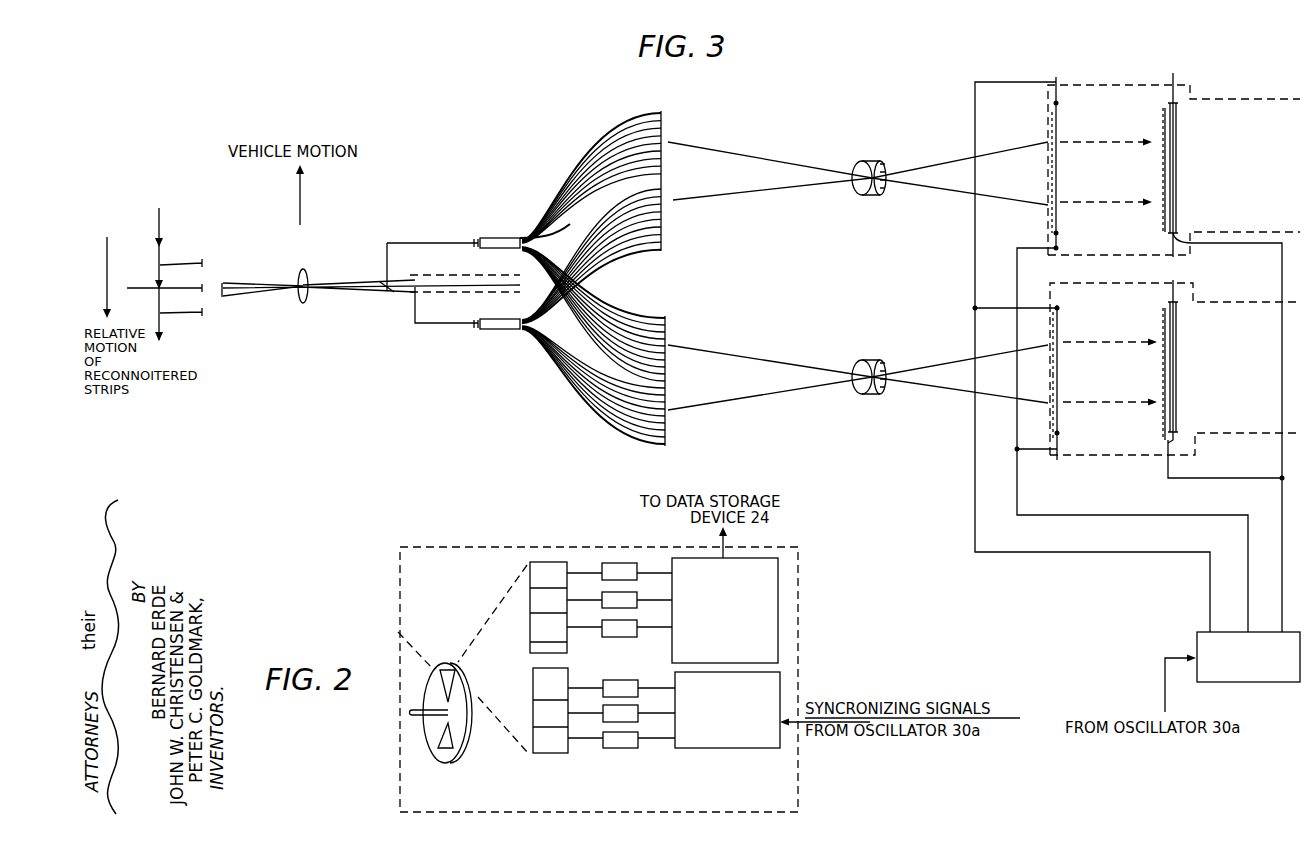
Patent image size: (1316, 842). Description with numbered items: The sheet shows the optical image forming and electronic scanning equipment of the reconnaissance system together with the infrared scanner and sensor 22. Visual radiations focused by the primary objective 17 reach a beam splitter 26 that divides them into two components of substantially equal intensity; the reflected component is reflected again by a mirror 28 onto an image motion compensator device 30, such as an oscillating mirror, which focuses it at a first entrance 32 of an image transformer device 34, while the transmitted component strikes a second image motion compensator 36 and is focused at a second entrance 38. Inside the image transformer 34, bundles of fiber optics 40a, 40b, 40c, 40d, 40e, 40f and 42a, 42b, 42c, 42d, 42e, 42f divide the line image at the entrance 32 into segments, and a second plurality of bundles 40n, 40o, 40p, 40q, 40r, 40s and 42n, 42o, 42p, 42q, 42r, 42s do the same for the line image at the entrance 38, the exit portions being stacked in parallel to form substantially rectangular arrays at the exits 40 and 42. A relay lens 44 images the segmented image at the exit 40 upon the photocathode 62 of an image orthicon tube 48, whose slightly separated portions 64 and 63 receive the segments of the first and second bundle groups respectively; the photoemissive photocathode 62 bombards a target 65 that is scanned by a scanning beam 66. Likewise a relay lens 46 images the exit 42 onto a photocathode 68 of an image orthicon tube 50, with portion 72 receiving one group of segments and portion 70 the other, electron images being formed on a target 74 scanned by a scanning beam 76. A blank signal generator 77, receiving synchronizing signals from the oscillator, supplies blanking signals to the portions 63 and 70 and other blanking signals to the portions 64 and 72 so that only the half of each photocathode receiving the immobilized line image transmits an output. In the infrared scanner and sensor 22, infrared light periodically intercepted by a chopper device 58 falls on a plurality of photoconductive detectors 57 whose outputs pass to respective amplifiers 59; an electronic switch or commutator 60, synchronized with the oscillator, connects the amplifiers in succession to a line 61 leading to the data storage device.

In FIG. 3, the primary objective 17 is at (303, 271).
In FIG. 2, the infrared scanner and sensor 22 is at (798, 627).
In FIG. 3, the beam splitter 26 is at (385, 289).
In FIG. 3, the mirror 28 is at (417, 296).
In FIG. 3, the image motion compensator device 30 is at (413, 320).
In FIG. 3, the first entrance 32 is at (486, 318).
In FIG. 3, the image transformer device 34 is at (583, 406).
In FIG. 3, the second image motion compensator 36 is at (388, 243).
In FIG. 3, the second entrance 38 is at (476, 247).
In FIG. 3, the exit 40 is at (645, 396).
In FIG. 3, the bundle of fiber optics 40a is at (663, 444).
In FIG. 3, the bundle of fiber optics 40b is at (668, 427).
In FIG. 3, the bundle of fiber optics 40c is at (648, 420).
In FIG. 3, the bundle of fiber optics 40d is at (650, 412).
In FIG. 3, the bundle of fiber optics 40e is at (672, 405).
In FIG. 3, the bundle of fiber optics 40f is at (668, 386).
In FIG. 3, the bundle of fiber optics 40n is at (670, 368).
In FIG. 3, the bundle of fiber optics 40o is at (610, 352).
In FIG. 3, the bundle of fiber optics 40p is at (672, 350).
In FIG. 3, the bundle of fiber optics 40q is at (672, 340).
In FIG. 3, the bundle of fiber optics 40r is at (670, 320).
In FIG. 3, the bundle of fiber optics 40s is at (664, 318).
In FIG. 3, the exit 42 is at (672, 173).
In FIG. 3, the bundle of fiber optics 42a is at (664, 255).
In FIG. 3, the bundle of fiber optics 42b is at (666, 243).
In FIG. 3, the bundle of fiber optics 42c is at (642, 232).
In FIG. 3, the bundle of fiber optics 42d is at (666, 224).
In FIG. 3, the bundle of fiber optics 42e is at (605, 222).
In FIG. 3, the bundle of fiber optics 42f is at (632, 192).
In FIG. 3, the bundle of fiber optics 42n is at (652, 155).
In FIG. 3, the bundle of fiber optics 42o is at (647, 157).
In FIG. 3, the bundle of fiber optics 42p is at (670, 160).
In FIG. 3, the bundle of fiber optics 42q is at (668, 143).
In FIG. 3, the bundle of fiber optics 42r is at (665, 124).
In FIG. 3, the bundle of fiber optics 42s is at (661, 113).
In FIG. 3, the relay lens 44 is at (880, 361).
In FIG. 3, the relay lens 46 is at (880, 162).
In FIG. 3, the image orthicon tube 48 is at (1262, 436).
In FIG. 3, the image orthicon tube 50 is at (1250, 86).
In FIG. 3, the photoconductive detectors 57 is at (157, 266).
In FIG. 2, the photoconductive detectors 57 is at (510, 633).
In FIG. 3, the chopper device 58 is at (157, 298).
In FIG. 2, the chopper device 58 is at (457, 757).
In FIG. 2, the amplifiers 59 is at (630, 637).
In FIG. 2, the electronic switch or commutator 60 is at (710, 737).
In FIG. 2, the line 61 is at (727, 543).
In FIG. 3, the photocathode 62 is at (1043, 365).
In FIG. 3, the photocathode portion 63 is at (1061, 408).
In FIG. 3, the photocathode portion 64 is at (1061, 332).
In FIG. 3, the target 65 is at (1177, 377).
In FIG. 3, the scanning beam 66 is at (1183, 402).
In FIG. 3, the photocathode 68 is at (1043, 175).
In FIG. 3, the photocathode portion 70 is at (1060, 218).
In FIG. 3, the photocathode portion 72 is at (1059, 131).
In FIG. 3, the target 74 is at (1176, 160).
In FIG. 3, the scanning beam 76 is at (1181, 199).
In FIG. 3, the blank signal generator 77 is at (1196, 638).